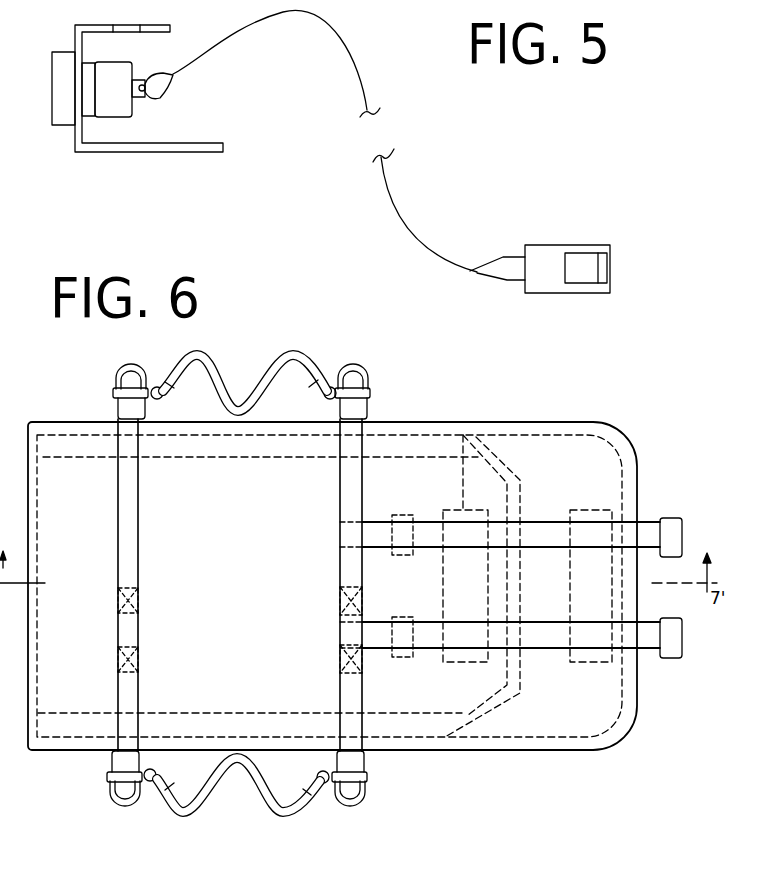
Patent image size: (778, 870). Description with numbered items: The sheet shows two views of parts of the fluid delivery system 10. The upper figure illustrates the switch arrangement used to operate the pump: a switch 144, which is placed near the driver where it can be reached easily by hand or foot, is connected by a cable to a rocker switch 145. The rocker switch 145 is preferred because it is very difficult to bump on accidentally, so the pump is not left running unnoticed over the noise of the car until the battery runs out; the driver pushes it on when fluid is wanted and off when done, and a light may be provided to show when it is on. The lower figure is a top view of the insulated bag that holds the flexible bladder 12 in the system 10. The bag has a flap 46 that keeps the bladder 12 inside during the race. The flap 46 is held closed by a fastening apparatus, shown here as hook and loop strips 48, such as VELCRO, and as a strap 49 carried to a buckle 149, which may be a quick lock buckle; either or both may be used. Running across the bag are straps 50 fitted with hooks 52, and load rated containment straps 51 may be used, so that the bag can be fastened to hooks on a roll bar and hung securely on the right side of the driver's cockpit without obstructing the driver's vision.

In FIG. 6, the system 10 is at (428, 773).
In FIG. 6, the bladder 12 is at (63, 418).
In FIG. 6, the flap 46 is at (597, 725).
In FIG. 6, the hook and loop strips 48 is at (463, 435).
In FIG. 6, the strap 49 is at (643, 532).
In FIG. 6, the buckle 149 is at (673, 535).
In FIG. 6, the straps 50 is at (122, 723).
In FIG. 6, the load rated containment straps 51 is at (190, 815).
In FIG. 6, the hooks 52 is at (113, 804).
In FIG. 5, the switch 144 is at (92, 152).
In FIG. 5, the rocker switch 145 is at (558, 293).